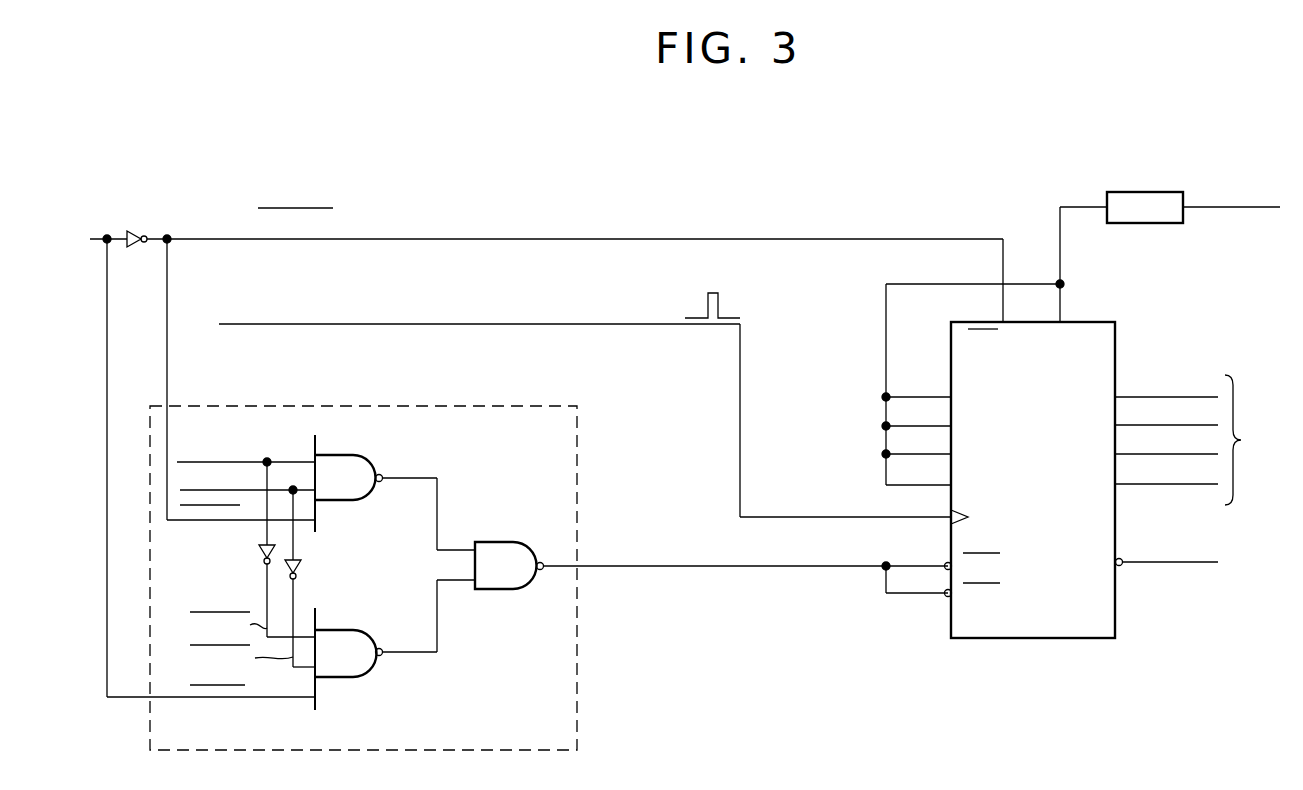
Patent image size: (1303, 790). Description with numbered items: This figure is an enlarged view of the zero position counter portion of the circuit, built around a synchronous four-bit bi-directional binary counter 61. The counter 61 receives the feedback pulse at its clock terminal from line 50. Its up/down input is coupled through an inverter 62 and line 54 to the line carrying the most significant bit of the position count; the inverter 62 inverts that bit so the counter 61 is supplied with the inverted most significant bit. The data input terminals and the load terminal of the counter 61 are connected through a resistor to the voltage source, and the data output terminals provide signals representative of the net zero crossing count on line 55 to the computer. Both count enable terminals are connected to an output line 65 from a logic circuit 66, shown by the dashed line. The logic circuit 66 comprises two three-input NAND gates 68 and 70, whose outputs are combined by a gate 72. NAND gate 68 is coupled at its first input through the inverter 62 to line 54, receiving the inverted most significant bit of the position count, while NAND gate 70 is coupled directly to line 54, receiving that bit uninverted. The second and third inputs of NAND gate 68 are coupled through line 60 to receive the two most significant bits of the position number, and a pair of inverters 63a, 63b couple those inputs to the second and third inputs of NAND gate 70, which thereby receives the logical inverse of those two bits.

The line 54 is at (126, 236).
The inverter 62 is at (142, 247).
The line 50 is at (618, 288).
The logic circuit 66 is at (380, 406).
The line 60 is at (180, 490).
The NAND gate 68 is at (362, 500).
The inverter 63a is at (258, 553).
The inverter 63b is at (297, 572).
The NAND gate 70 is at (365, 677).
The 7408 AND gate 72 is at (520, 589).
The output line 65 is at (685, 566).
The synchronous 4-bit bi-directional binary counter 61 is at (1115, 355).
The line 55 is at (1233, 410).